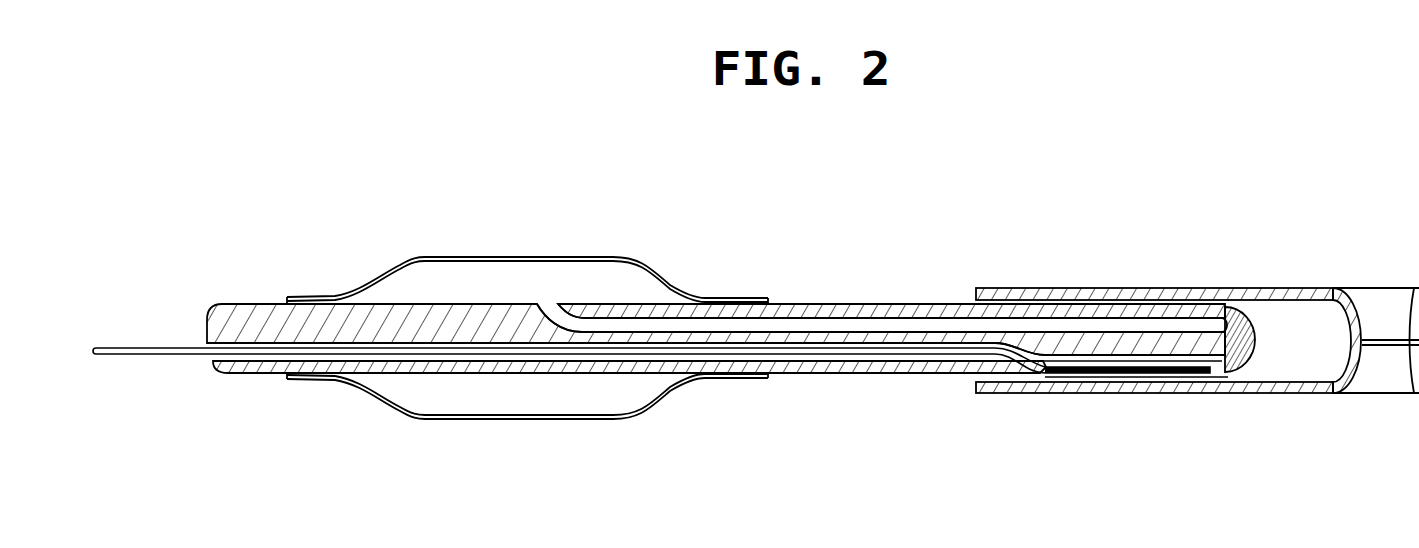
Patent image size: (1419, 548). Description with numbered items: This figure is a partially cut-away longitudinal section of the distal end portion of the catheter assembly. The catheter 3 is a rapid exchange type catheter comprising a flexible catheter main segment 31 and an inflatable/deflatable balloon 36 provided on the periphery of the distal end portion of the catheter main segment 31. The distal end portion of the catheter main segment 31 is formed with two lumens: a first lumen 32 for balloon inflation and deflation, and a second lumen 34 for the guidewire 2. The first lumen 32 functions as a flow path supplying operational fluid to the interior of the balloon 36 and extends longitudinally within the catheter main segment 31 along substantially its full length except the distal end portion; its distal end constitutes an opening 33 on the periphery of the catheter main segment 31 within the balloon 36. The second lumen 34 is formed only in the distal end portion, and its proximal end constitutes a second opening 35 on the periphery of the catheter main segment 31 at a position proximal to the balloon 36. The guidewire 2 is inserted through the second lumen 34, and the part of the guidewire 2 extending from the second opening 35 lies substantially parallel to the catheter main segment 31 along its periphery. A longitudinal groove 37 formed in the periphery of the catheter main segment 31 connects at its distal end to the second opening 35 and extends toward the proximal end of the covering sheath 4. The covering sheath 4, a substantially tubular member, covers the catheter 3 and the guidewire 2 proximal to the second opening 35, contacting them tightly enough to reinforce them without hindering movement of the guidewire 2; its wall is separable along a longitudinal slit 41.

The guidewire 2 is at (149, 356).
The catheter 3 is at (332, 292).
The covering sheath 4 is at (1228, 290).
The catheter main segment 31 is at (482, 322).
The first lumen 32 is at (887, 327).
The opening 33 is at (553, 310).
The second lumen 34 is at (662, 362).
The second opening 35 is at (1045, 375).
The balloon 36 is at (535, 421).
The groove 37 is at (1113, 345).
The slit 41 is at (1380, 352).